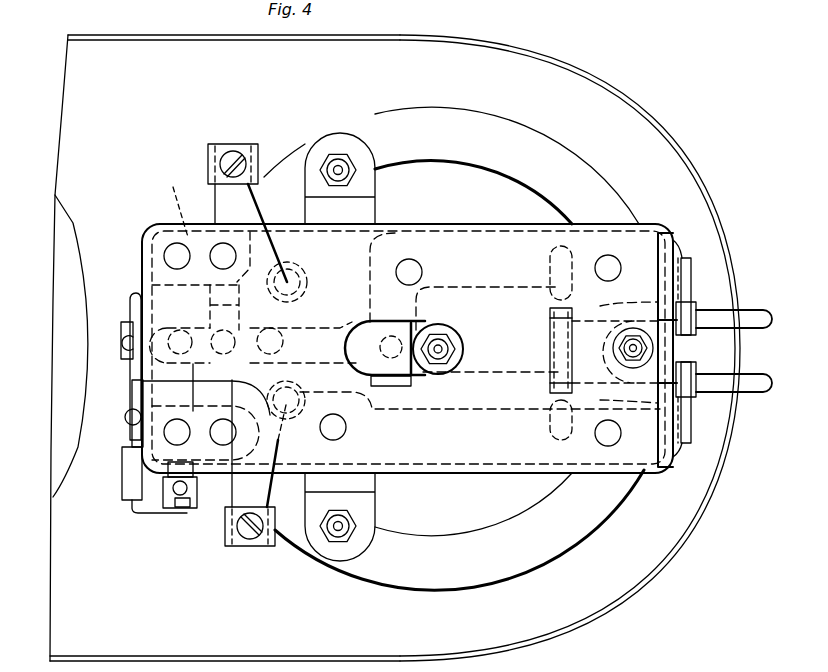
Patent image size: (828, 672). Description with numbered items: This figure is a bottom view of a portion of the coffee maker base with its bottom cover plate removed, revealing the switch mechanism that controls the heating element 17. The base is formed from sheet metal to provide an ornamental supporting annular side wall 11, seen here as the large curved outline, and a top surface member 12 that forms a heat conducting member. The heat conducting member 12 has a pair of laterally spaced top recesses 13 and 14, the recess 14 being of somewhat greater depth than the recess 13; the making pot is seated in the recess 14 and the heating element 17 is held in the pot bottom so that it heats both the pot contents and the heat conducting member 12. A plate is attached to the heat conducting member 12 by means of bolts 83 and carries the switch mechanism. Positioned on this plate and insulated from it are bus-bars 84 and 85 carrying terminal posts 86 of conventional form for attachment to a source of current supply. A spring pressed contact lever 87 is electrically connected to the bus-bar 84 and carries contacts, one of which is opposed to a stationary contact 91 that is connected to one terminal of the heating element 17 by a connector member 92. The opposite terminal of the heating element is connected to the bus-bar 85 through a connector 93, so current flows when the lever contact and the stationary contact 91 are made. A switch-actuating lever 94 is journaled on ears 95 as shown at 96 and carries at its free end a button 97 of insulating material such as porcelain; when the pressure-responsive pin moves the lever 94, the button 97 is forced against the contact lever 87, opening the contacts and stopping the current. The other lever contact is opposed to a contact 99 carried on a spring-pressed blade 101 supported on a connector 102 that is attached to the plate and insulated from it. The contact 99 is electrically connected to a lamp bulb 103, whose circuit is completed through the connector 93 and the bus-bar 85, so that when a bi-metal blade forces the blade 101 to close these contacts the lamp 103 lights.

The annular side wall 11 is at (600, 85).
The top surface member 12 is at (225, 348).
The top recess 13 is at (80, 221).
The top recess 14 is at (423, 114).
The heating element 17 is at (262, 188).
The bolts 83 is at (351, 161).
The bus-bar 84 is at (468, 222).
The bus-bar 85 is at (449, 465).
The terminal posts 86 is at (757, 325).
The spring pressed contact lever 87 is at (248, 332).
The stationary contact 91 is at (225, 330).
The connector member 92 is at (174, 204).
The connector 93 is at (235, 491).
The switch-actuating lever 94 is at (346, 321).
The ears 95 is at (553, 378).
The journal 96 is at (445, 347).
The button 97 is at (284, 342).
The contact 99 is at (185, 331).
The spring-pressed blade 101 is at (187, 367).
The connector 102 is at (173, 515).
The lamp bulb 103 is at (132, 301).